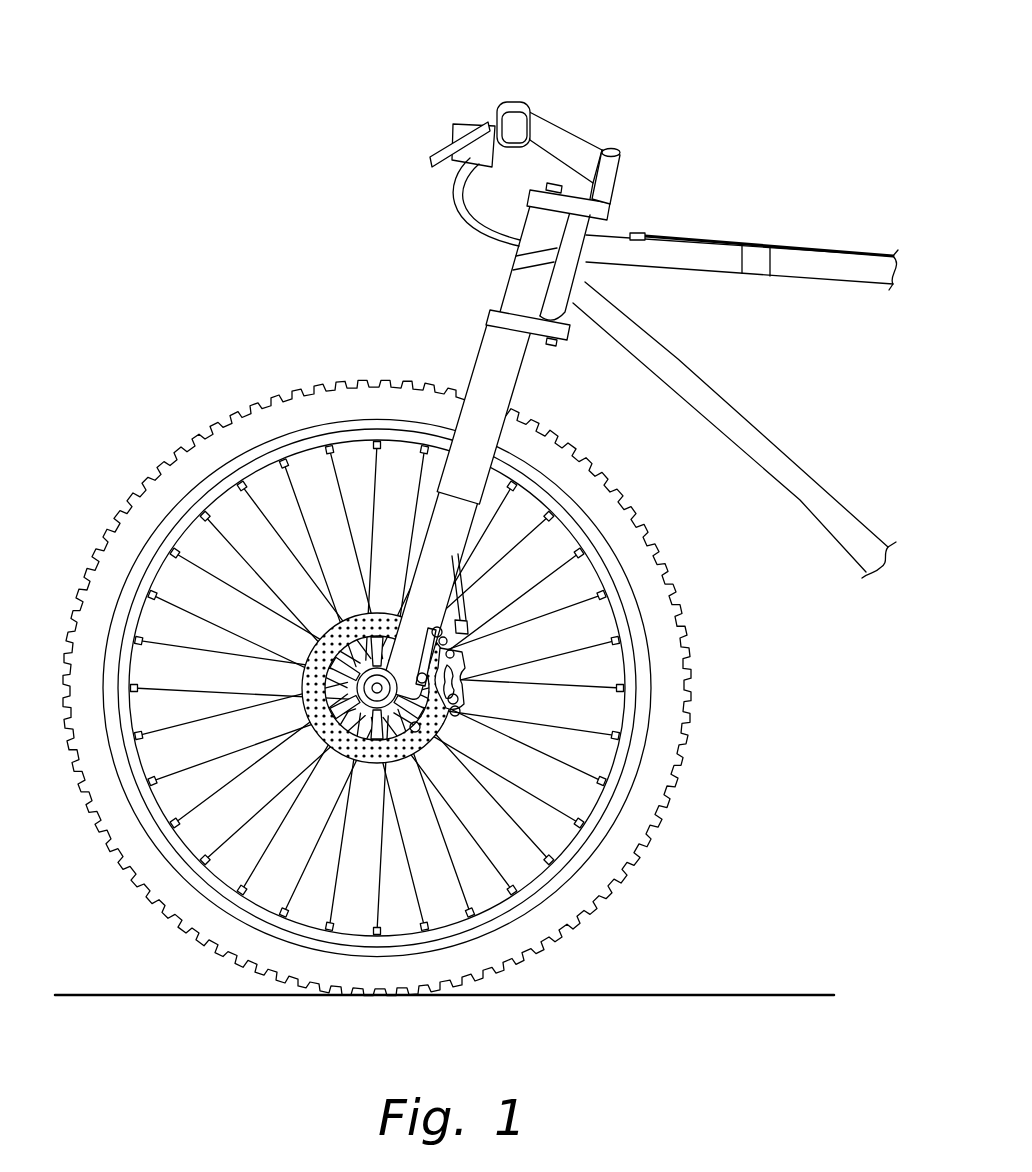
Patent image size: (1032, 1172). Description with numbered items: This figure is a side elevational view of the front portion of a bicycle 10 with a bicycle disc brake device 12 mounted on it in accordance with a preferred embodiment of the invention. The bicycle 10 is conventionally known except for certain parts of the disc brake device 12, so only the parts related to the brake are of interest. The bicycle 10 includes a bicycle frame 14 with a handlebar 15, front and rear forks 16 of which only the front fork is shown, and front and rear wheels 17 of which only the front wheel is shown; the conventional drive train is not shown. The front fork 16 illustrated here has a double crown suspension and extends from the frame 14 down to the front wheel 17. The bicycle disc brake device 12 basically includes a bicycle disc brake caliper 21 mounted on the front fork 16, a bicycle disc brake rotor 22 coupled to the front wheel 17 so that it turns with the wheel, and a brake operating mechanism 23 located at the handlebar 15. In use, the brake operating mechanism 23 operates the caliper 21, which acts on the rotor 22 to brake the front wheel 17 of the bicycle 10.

The bicycle 10 is at (318, 234).
The bicycle disc brake device 12 is at (458, 738).
The bicycle frame 14 is at (670, 352).
The handlebar 15 is at (560, 132).
The front fork 16 is at (523, 362).
The front wheel 17 is at (673, 580).
The bicycle disc brake caliper 21 is at (478, 659).
The bicycle disc brake rotor 22 is at (250, 818).
The brake operating mechanism 23 is at (482, 127).